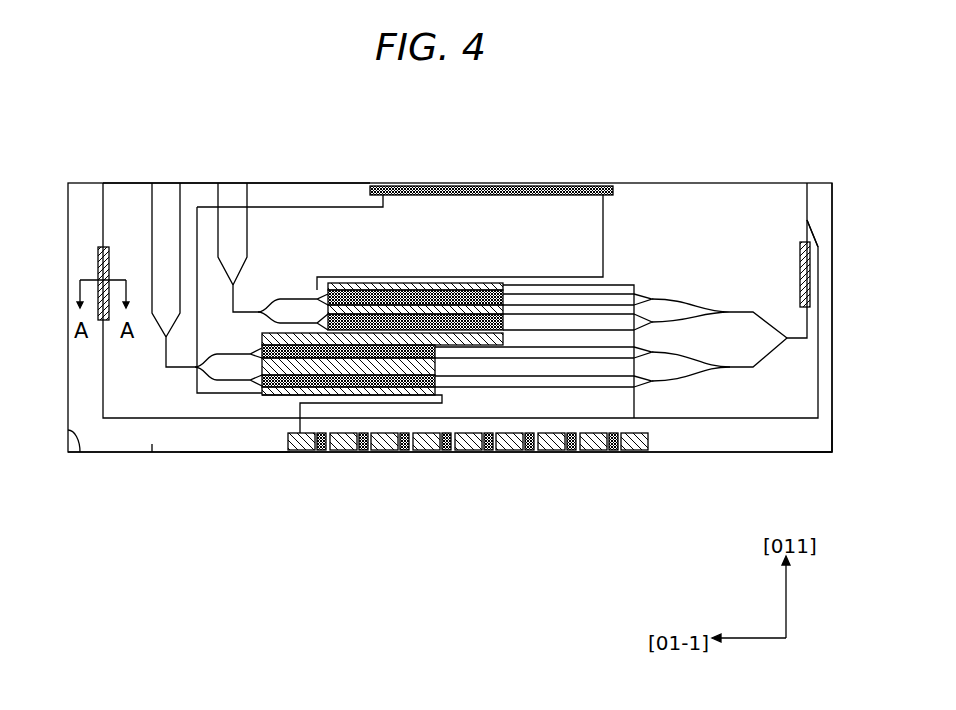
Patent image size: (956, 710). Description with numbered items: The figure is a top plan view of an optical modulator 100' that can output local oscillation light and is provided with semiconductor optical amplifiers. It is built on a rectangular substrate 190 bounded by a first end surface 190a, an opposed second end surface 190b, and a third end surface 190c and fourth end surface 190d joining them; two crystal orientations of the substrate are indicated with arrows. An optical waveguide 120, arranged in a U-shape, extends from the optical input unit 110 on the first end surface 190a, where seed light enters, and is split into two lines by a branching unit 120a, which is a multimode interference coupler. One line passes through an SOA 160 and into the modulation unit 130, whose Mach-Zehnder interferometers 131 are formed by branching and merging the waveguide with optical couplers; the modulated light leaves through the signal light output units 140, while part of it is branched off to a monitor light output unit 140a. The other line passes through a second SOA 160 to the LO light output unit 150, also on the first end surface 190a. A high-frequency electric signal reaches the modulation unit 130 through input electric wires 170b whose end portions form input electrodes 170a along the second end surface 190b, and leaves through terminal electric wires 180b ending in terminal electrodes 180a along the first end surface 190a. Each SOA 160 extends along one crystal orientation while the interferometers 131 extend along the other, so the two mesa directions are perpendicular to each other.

The optical modulator 100' is at (443, 263).
The optical input unit 110 is at (831, 183).
The optical waveguide 120 is at (806, 186).
The branching unit 120a is at (806, 218).
The modulation unit 130 is at (476, 378).
The Mach-Zehnder interferometer 131 is at (546, 392).
The signal light output unit 140 is at (152, 183).
The monitor light output unit 140a is at (180, 183).
The LO light output unit 150 is at (103, 183).
The semiconductor optical amplifier 160 is at (108, 250).
The input electrode 170a is at (632, 452).
The input electric wire 170b is at (636, 402).
The terminal electrode 180a is at (385, 186).
The terminal electric wire 180b is at (352, 186).
The substrate 190 is at (152, 444).
The first end surface 190a is at (310, 183).
The second end surface 190b is at (215, 452).
The third end surface 190c is at (77, 452).
The fourth end surface 190d is at (830, 454).